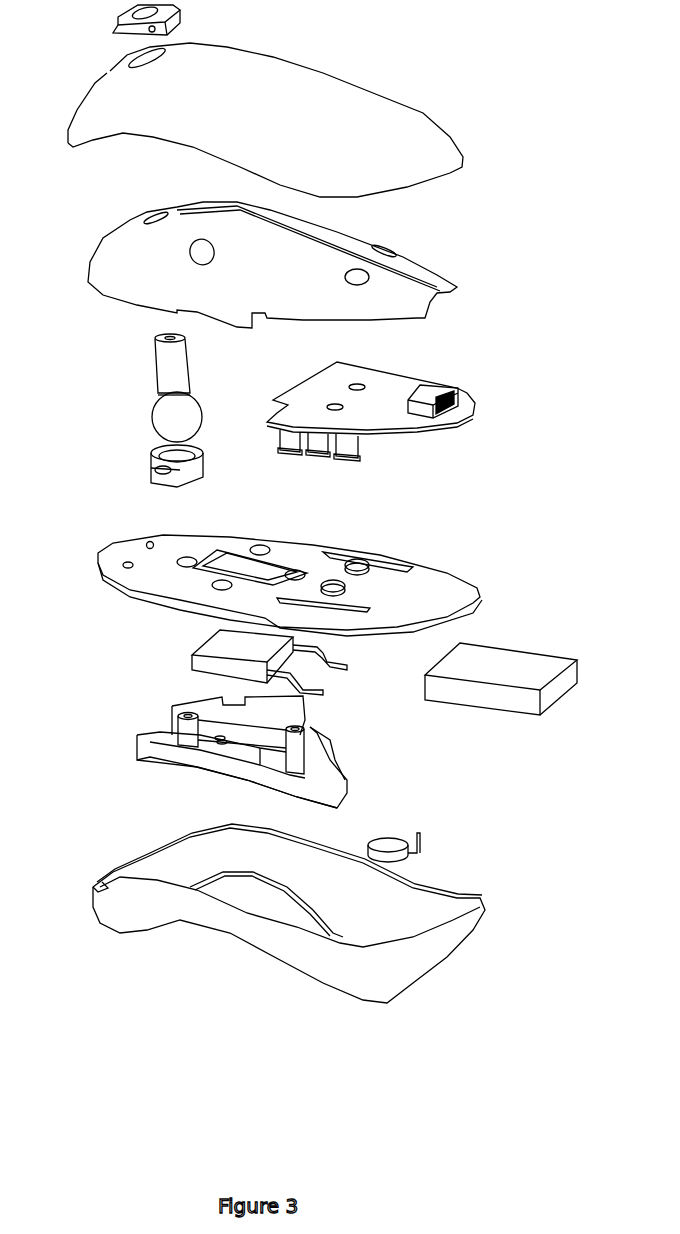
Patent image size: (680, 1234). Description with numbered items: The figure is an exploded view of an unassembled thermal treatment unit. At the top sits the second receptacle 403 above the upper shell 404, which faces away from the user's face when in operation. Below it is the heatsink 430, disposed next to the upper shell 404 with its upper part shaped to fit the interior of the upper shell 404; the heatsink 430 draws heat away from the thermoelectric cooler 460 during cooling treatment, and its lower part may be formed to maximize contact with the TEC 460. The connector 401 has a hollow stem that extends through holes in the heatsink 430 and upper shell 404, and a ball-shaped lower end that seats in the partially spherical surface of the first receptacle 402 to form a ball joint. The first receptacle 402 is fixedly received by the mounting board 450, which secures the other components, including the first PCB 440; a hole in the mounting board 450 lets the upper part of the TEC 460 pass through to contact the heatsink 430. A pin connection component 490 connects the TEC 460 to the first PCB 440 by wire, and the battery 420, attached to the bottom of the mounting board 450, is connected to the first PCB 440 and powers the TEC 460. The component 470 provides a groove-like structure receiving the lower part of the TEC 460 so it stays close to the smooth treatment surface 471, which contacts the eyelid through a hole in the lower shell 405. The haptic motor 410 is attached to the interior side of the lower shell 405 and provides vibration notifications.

The second receptacle 403 is at (112, 13).
The upper shell 404 is at (417, 107).
The heatsink 430 is at (476, 293).
The connector 401 is at (146, 367).
The first receptacle 402 is at (144, 465).
The first PCB 440 is at (478, 437).
The pin connection component 490 is at (470, 380).
The mounting board 450 is at (487, 587).
The thermoelectric cooler (TEC) 460 is at (355, 675).
The battery 420 is at (587, 683).
The component 470 is at (360, 775).
The treatment surface 471 is at (156, 772).
The haptic motor 410 is at (426, 845).
The lower shell 405 is at (500, 915).